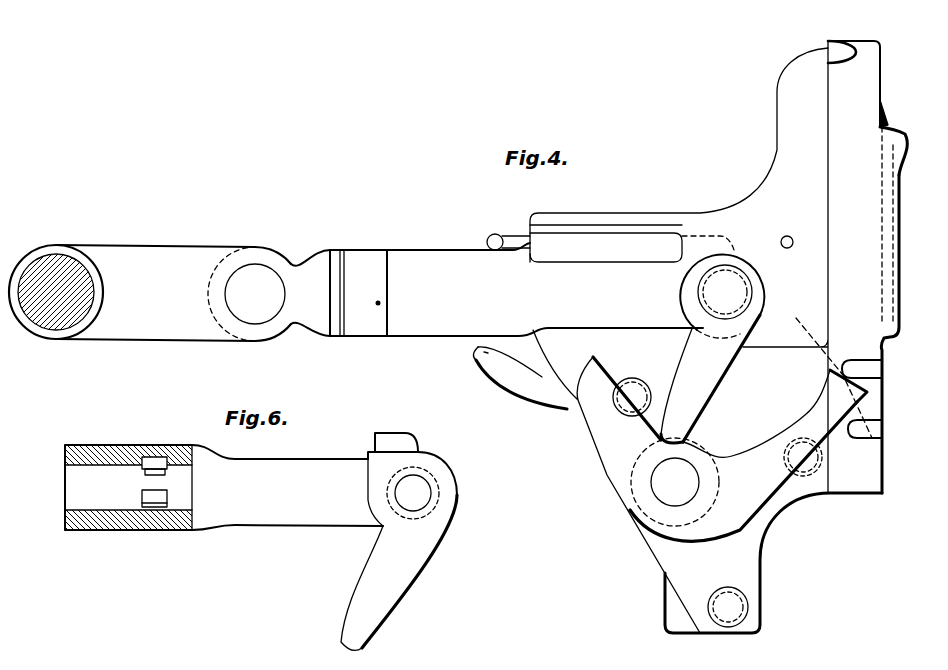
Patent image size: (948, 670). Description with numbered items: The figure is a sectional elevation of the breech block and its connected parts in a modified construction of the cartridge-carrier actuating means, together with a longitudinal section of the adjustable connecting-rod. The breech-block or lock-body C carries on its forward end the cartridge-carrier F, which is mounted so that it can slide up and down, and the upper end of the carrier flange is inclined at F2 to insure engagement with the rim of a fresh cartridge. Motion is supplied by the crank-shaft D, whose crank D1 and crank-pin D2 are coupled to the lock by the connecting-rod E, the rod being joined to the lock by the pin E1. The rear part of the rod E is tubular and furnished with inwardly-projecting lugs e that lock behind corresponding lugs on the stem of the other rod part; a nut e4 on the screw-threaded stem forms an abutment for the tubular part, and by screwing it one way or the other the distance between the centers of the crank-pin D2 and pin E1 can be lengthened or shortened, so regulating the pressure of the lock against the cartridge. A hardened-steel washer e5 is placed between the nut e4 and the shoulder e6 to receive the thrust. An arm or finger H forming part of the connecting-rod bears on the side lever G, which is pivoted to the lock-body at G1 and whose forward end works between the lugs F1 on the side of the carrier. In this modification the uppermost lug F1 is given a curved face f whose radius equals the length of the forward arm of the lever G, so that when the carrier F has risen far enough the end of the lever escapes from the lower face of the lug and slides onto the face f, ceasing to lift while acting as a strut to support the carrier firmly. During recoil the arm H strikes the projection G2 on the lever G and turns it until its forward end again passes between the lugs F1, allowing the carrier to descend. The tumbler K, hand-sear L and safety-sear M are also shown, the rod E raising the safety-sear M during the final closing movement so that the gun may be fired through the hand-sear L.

In FIG. 4, the breech-block or lock-body C is at (679, 267).
In FIG. 4, the crank-shaft D is at (56, 292).
In FIG. 4, the crank D1 is at (155, 293).
In FIG. 4, the crank-pin D2 is at (269, 294).
In FIG. 4, the connecting-rod E is at (516, 289).
In FIG. 6, the connecting-rod E is at (224, 480).
In FIG. 6, the inwardly-projecting lugs e is at (152, 497).
In FIG. 4, the nut e4 is at (366, 295).
In FIG. 4, the hardened-steel washer e5 is at (344, 338).
In FIG. 4, the shoulder e6 is at (333, 330).
In FIG. 4, the pin connecting the rod to the lock E1 is at (722, 296).
In FIG. 4, the cartridge-carrier F is at (863, 267).
In FIG. 4, the lugs on the cartridge-carrier F1 is at (893, 430).
In FIG. 4, the inclined upper end of carrier flange F2 is at (908, 138).
In FIG. 4, the curved face of the upper lug f is at (830, 372).
In FIG. 4, the side lever G is at (695, 481).
In FIG. 4, the pivot of the side lever G1 is at (675, 482).
In FIG. 4, the projection on the lever G2 is at (755, 444).
In FIG. 4, the arm or finger of the connecting-rod H is at (710, 379).
In FIG. 6, the arm or finger of the connecting-rod H is at (399, 541).
In FIG. 4, the tumbler K is at (520, 378).
In FIG. 4, the hand-sear L is at (773, 563).
In FIG. 4, the safety-sear M is at (500, 236).